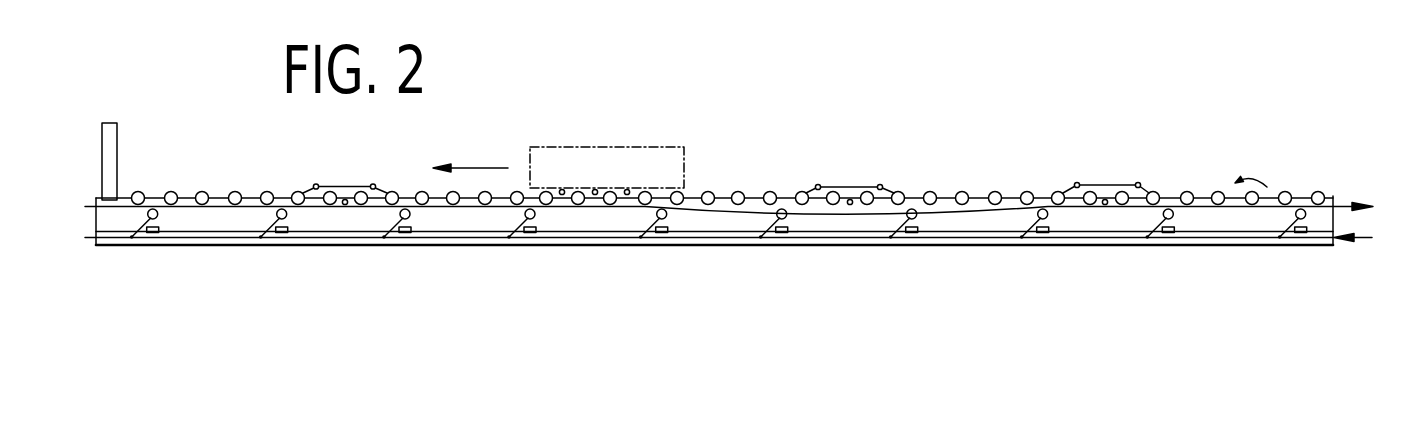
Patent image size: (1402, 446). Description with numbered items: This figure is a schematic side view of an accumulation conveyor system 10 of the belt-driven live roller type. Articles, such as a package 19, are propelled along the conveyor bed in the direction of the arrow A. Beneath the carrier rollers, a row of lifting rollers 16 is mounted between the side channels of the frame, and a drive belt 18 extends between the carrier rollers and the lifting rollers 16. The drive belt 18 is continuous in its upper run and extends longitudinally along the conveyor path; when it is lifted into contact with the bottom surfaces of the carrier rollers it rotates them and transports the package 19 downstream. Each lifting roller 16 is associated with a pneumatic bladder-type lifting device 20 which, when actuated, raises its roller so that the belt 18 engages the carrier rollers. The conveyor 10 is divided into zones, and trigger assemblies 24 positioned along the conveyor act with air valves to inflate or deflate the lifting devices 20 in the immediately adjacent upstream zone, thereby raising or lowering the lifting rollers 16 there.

The accumulation conveyor system 10 is at (1006, 149).
The lifting roller 16 is at (158, 211).
The drive belt 18 is at (218, 198).
The package 19 is at (660, 147).
The pneumatic bladder-type lifting device 20 is at (153, 232).
The trigger assembly 24 is at (345, 177).